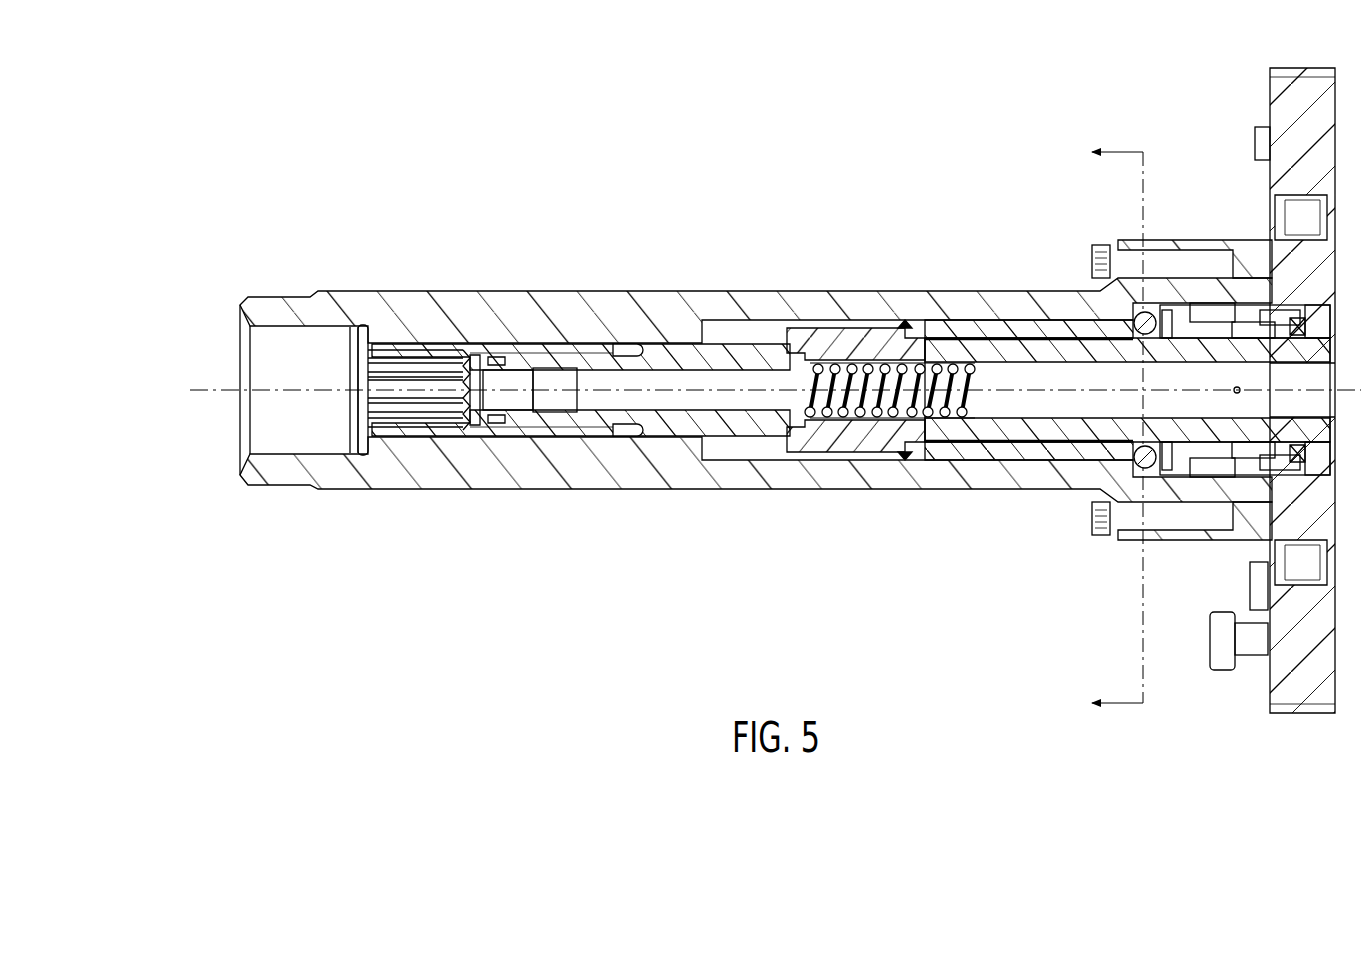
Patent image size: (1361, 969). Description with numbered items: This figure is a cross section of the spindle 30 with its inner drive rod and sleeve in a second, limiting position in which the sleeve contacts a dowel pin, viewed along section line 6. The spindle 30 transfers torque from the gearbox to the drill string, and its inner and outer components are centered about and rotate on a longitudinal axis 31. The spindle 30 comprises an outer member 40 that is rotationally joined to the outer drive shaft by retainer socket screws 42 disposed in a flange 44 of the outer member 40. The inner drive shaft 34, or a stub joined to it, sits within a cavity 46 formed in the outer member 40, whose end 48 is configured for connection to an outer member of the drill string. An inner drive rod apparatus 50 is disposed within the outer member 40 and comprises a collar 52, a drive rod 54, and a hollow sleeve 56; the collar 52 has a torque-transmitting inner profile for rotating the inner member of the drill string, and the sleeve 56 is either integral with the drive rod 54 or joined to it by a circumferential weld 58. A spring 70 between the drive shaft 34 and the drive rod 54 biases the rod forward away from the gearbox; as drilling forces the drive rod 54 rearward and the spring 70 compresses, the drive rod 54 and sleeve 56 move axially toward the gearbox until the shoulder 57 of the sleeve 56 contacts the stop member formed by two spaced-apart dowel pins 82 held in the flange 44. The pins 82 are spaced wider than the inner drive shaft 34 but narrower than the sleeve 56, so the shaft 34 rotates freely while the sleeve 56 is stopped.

The spindle 30 is at (628, 190).
The longitudinal axis 31 is at (190, 385).
The section line 6- 6 is at (1117, 428).
The outer member 40 is at (748, 292).
The retainer socket screws 42 is at (1100, 240).
The flange 44 is at (1255, 240).
The cavity 46 is at (755, 450).
The end 48 is at (275, 298).
The inner drive rod apparatus 50 is at (548, 515).
The collar 52 is at (415, 440).
The drive rod 54 is at (688, 450).
The hollow sleeve 56 is at (1098, 450).
The shoulder 57 is at (1103, 455).
The circumferential weld 58 is at (910, 440).
The spring 70 is at (832, 440).
The inner drive shaft 34 is at (1020, 440).
The dowel pins 82 is at (1133, 470).